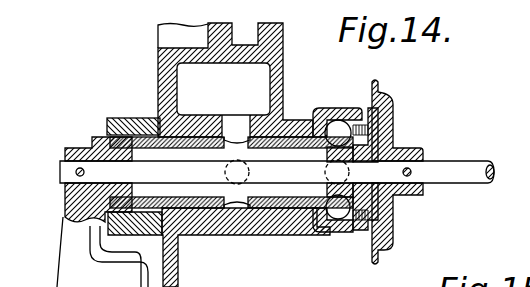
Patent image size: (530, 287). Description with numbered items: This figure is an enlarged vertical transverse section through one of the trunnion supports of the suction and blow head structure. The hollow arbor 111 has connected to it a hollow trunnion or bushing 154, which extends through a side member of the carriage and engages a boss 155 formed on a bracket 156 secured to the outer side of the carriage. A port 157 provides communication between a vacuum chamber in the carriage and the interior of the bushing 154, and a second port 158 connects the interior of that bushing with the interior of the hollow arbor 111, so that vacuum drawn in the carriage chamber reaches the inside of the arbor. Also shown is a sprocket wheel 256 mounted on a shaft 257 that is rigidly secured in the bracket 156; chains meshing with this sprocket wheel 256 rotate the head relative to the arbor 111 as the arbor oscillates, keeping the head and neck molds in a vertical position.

The arbor 111 is at (333, 118).
The hollow trunnion or bushing 154 is at (298, 120).
The boss 155 is at (113, 146).
The bracket 156 is at (67, 267).
The port 157 is at (238, 140).
The port 158 is at (329, 234).
The sprocket wheel 256 is at (381, 108).
The shaft 257 is at (469, 165).